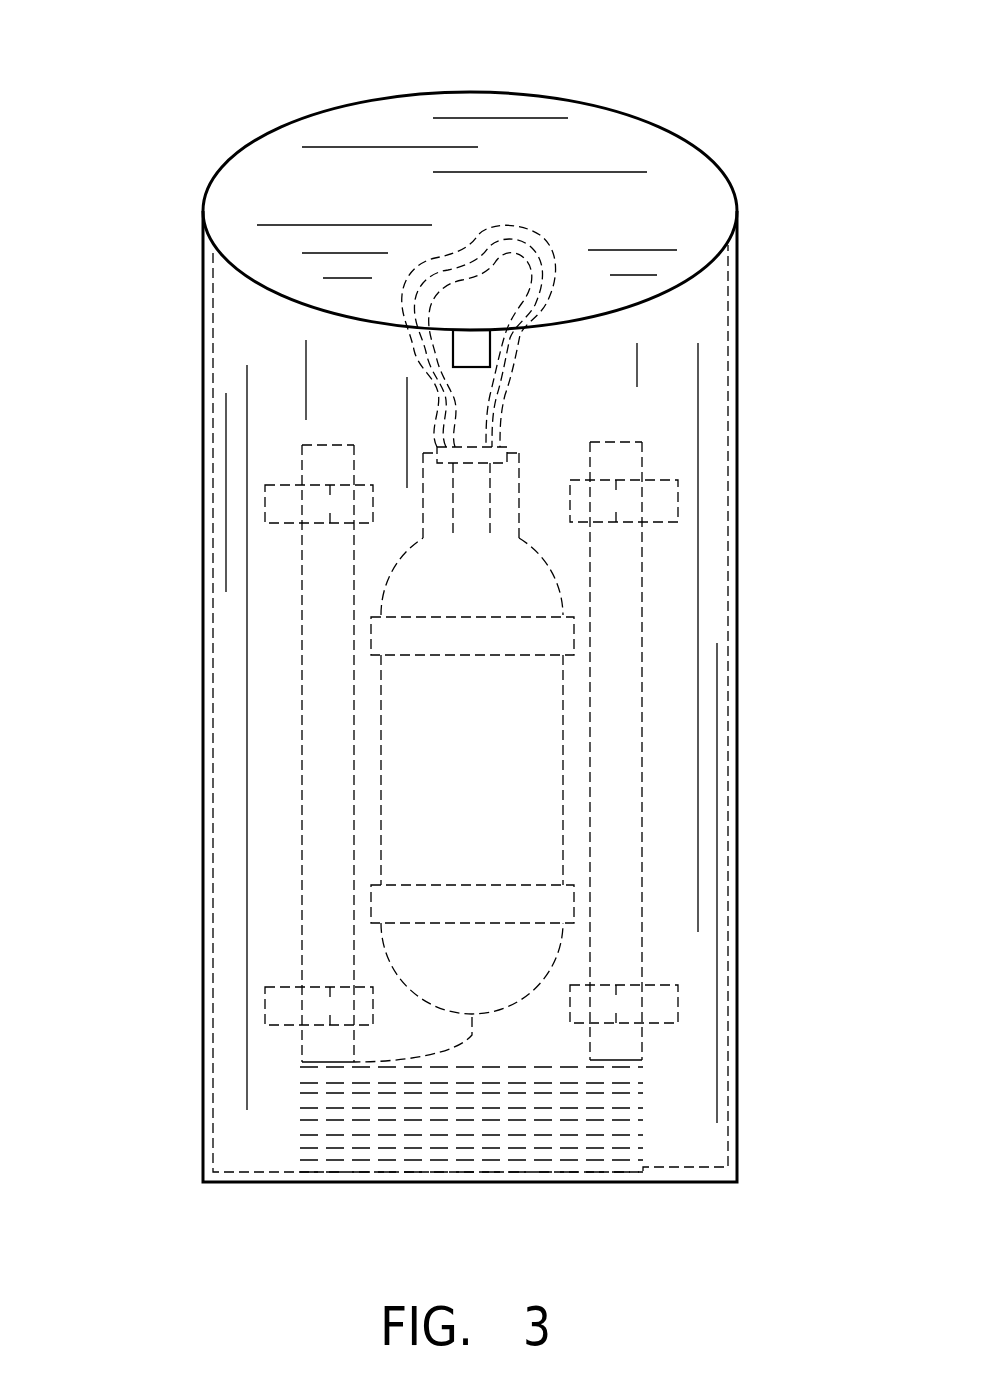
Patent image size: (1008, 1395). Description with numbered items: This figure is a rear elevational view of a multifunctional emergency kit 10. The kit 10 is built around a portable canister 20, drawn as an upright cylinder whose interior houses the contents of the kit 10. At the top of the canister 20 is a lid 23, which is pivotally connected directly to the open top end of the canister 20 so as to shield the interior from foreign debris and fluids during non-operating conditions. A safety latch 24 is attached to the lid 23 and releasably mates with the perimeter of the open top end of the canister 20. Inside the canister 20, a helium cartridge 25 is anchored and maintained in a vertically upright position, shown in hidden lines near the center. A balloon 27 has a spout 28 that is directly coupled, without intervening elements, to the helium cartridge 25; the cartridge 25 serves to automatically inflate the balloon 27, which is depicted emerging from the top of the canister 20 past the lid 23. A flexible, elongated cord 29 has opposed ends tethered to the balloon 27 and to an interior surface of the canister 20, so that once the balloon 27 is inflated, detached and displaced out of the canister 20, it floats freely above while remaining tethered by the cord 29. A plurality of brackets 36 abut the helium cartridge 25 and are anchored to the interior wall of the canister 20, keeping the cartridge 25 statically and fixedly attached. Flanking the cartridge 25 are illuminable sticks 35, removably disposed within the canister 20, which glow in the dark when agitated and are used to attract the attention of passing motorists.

The multifunctional emergency kit 10 is at (188, 60).
The portable canister 20 is at (735, 570).
The lid 23 is at (618, 135).
The safety latch 24 is at (465, 341).
The helium cartridge 25 is at (507, 750).
The balloon 27 is at (510, 375).
The spout 28 is at (510, 450).
The cord 29 is at (492, 1145).
The illuminable sticks 35 is at (328, 890).
The brackets 36 is at (437, 648).